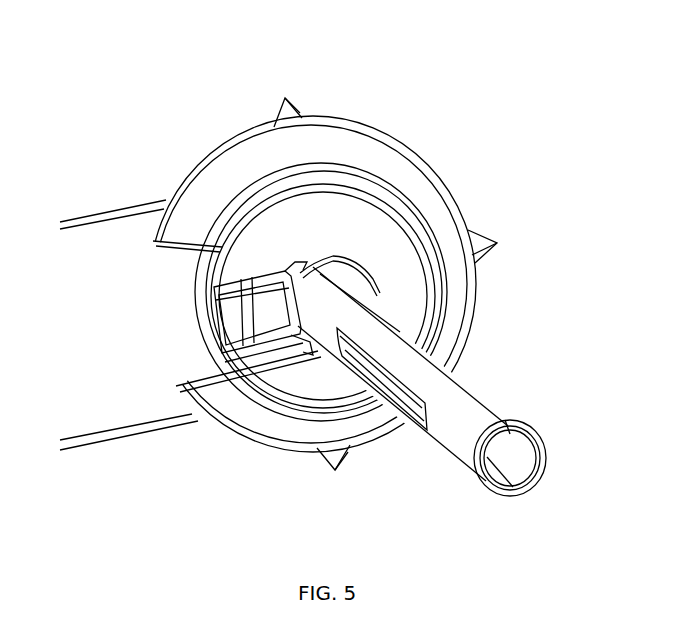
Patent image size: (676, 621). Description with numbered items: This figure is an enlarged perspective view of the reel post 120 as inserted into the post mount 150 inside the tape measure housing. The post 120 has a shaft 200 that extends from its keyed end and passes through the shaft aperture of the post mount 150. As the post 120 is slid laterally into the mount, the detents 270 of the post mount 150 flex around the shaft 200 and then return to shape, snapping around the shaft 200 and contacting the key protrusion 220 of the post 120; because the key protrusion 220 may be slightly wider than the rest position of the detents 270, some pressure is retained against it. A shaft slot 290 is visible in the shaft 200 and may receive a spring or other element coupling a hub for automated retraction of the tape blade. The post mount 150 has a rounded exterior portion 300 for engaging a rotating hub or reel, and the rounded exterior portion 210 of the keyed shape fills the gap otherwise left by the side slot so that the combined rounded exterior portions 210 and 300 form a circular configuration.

The post 120 is at (525, 383).
The post mount 150 is at (352, 247).
The shaft 200 is at (396, 329).
The rounded exterior portion 210 is at (205, 318).
The key protrusion 220 is at (270, 315).
The detents 270 is at (305, 263).
The shaft slot 290 is at (397, 403).
The rounded exterior portion 300 is at (445, 268).